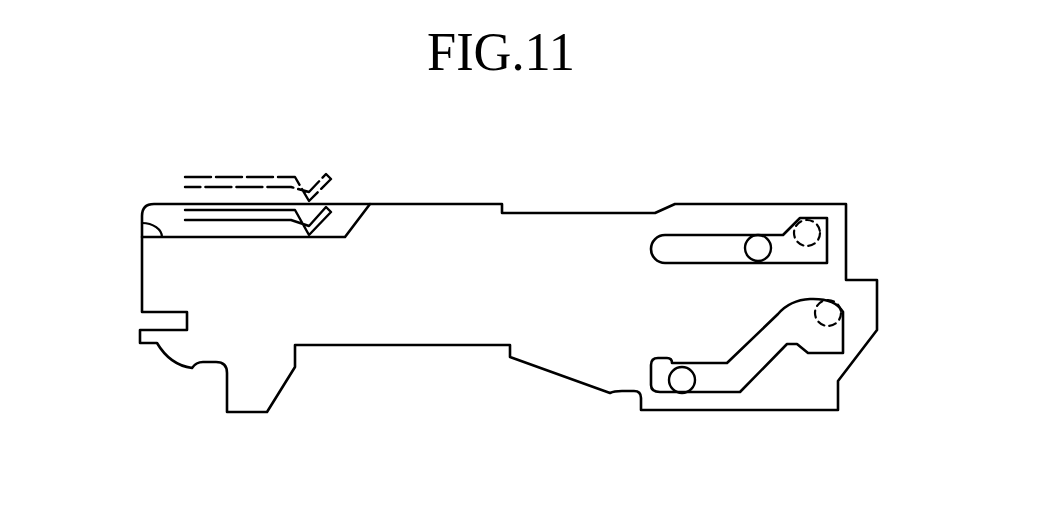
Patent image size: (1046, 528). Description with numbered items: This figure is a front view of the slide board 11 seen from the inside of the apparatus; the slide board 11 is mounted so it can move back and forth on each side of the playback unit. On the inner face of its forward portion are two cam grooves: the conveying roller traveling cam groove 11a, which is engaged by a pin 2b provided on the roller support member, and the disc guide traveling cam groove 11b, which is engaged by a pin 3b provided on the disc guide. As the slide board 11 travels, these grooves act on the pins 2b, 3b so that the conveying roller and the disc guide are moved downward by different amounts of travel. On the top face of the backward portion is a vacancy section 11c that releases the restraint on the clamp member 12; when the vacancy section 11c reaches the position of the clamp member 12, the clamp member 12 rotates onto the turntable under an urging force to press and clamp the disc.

The slide board 11 is at (423, 212).
The conveying roller traveling cam groove 11a is at (758, 368).
The disc guide traveling cam groove 11b is at (783, 242).
The vacancy section 11c is at (142, 224).
The clamp member 12 is at (236, 210).
The pin 3b is at (753, 246).
The pin 2b is at (681, 385).